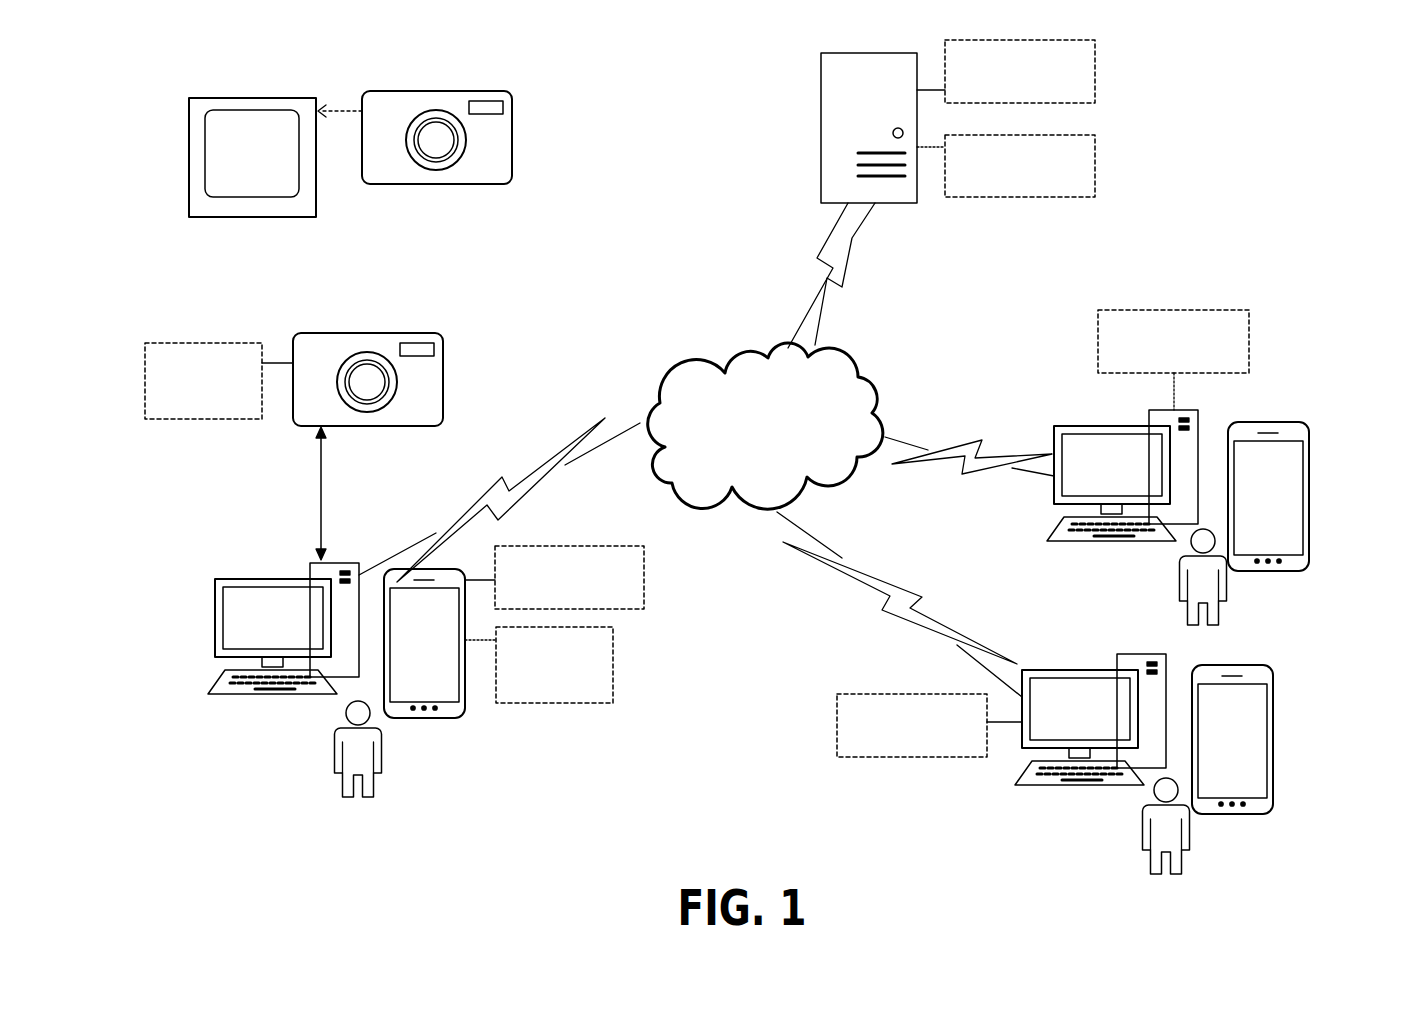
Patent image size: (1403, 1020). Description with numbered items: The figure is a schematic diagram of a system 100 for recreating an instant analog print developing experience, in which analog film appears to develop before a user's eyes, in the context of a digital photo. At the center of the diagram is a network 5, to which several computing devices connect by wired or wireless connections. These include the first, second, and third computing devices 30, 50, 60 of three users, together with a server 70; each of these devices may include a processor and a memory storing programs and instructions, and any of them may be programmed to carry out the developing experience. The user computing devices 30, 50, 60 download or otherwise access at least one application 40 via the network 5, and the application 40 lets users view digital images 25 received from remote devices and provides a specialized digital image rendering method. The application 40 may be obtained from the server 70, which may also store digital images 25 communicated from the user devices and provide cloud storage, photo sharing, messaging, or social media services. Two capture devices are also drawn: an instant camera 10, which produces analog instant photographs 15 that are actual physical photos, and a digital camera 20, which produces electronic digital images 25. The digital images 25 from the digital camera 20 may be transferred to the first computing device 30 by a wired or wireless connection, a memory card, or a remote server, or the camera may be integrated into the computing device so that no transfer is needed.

The network 5 is at (692, 360).
The instant camera 10 is at (452, 91).
The analog instant photographs 15 is at (293, 98).
The digital camera 20 is at (380, 333).
The digital images 25 is at (228, 343).
The first computing device 30 is at (290, 585).
The application 40 is at (1095, 50).
The second computing device 50 is at (1120, 440).
The third computing device 60 is at (1100, 683).
The server 70 is at (821, 128).
The system 100 is at (1292, 257).